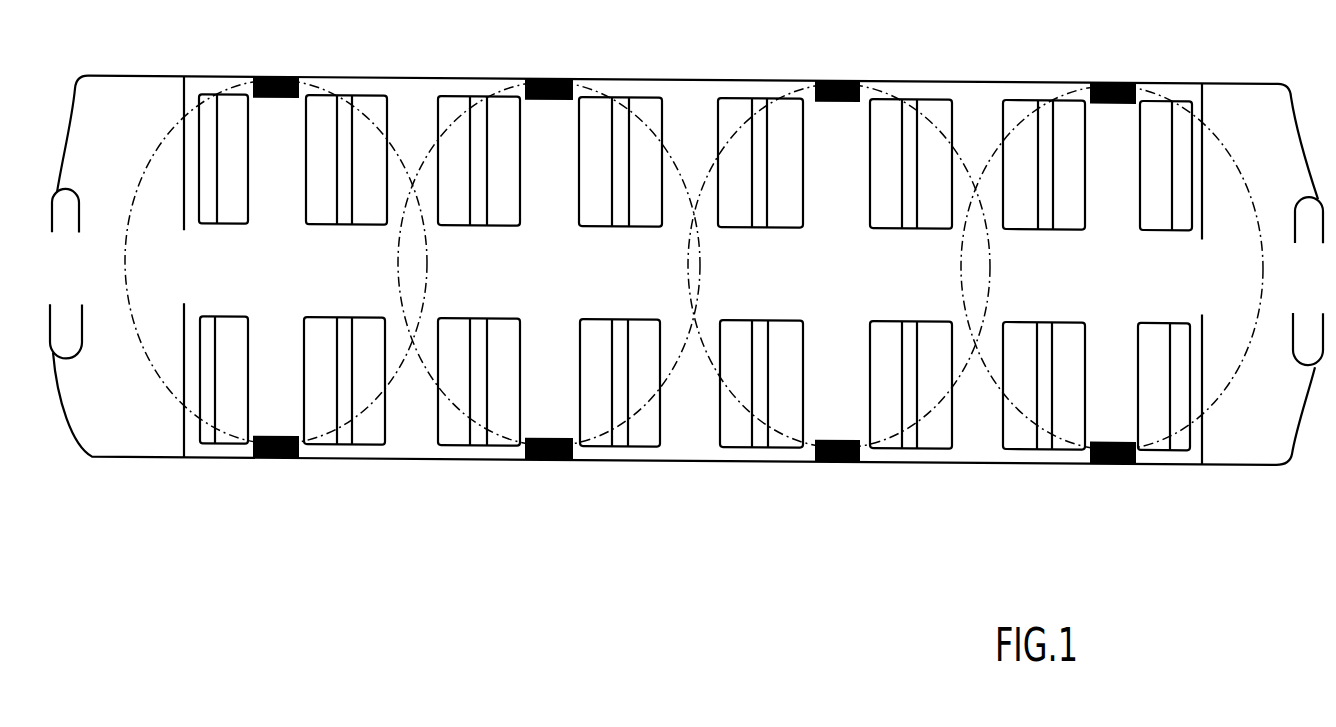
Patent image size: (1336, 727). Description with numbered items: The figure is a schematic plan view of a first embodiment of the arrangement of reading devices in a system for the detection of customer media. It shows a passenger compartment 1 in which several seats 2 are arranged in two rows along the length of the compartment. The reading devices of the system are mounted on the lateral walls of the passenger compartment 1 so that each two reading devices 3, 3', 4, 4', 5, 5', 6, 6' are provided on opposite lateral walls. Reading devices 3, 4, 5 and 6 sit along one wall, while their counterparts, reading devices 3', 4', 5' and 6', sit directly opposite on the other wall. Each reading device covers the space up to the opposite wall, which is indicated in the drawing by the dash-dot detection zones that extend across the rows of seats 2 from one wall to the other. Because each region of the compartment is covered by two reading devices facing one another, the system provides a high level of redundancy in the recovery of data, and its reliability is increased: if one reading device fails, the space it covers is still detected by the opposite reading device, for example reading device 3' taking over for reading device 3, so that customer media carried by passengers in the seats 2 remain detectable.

The passenger compartment 1 is at (1200, 61).
The seats 2 is at (503, 223).
The reading device 3 is at (276, 241).
The reading device 4 is at (549, 242).
The reading device 5 is at (839, 244).
The reading device 6 is at (1112, 248).
The reading device 3' is at (276, 472).
The reading device 4' is at (549, 475).
The reading device 5' is at (837, 476).
The reading device 6' is at (1113, 475).